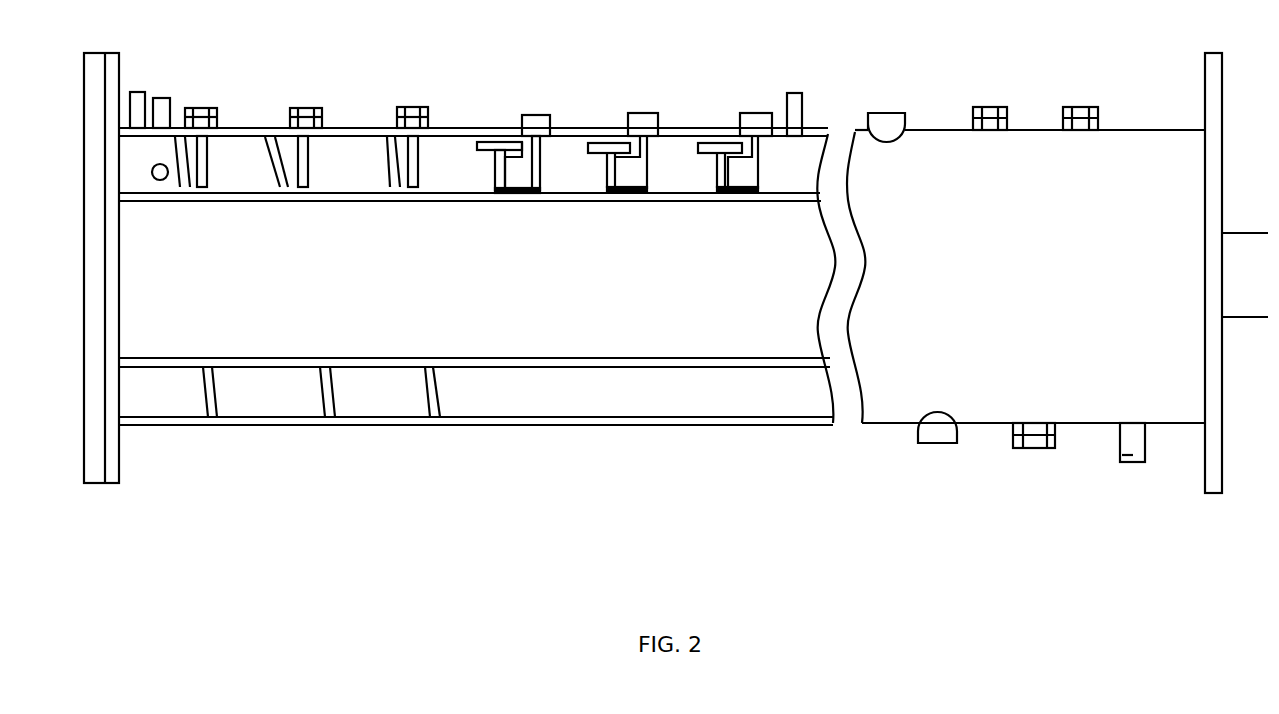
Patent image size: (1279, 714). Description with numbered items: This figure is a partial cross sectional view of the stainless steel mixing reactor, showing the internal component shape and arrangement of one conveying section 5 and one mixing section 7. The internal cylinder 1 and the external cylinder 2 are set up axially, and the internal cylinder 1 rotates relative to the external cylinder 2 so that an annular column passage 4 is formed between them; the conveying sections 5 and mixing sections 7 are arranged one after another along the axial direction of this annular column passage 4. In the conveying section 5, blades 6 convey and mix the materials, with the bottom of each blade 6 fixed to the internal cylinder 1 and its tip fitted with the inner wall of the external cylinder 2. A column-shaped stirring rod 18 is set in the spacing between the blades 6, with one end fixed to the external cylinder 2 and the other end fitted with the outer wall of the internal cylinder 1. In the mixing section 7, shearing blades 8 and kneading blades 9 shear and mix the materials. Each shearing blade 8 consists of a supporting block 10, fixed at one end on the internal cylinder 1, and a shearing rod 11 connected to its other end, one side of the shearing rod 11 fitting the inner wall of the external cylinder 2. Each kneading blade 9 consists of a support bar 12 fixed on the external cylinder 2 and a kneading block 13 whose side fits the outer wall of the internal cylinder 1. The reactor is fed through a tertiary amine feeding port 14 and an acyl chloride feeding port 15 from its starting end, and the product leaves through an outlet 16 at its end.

The internal cylinder 1 is at (373, 366).
The external cylinder 2 is at (258, 426).
The annular column passage 4 is at (485, 400).
The conveying section 5 is at (345, 182).
The blade 6 is at (280, 150).
The mixing section 7 is at (675, 178).
The shearing blade 8 is at (492, 136).
The kneading blade 9 is at (540, 114).
The supporting block 10 is at (500, 190).
The shearing rod 11 is at (493, 150).
The support bar 12 is at (540, 148).
The kneading block 13 is at (540, 195).
The tertiary amine feeding port 14 is at (157, 180).
The acyl chloride feeding port 15 is at (166, 99).
The outlet 16 is at (1122, 455).
The stirring rod 18 is at (306, 150).